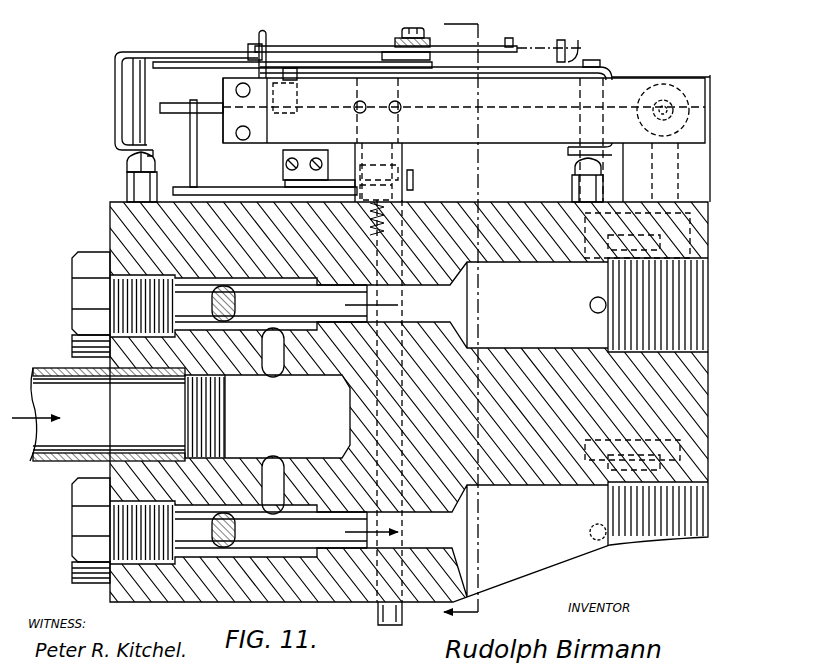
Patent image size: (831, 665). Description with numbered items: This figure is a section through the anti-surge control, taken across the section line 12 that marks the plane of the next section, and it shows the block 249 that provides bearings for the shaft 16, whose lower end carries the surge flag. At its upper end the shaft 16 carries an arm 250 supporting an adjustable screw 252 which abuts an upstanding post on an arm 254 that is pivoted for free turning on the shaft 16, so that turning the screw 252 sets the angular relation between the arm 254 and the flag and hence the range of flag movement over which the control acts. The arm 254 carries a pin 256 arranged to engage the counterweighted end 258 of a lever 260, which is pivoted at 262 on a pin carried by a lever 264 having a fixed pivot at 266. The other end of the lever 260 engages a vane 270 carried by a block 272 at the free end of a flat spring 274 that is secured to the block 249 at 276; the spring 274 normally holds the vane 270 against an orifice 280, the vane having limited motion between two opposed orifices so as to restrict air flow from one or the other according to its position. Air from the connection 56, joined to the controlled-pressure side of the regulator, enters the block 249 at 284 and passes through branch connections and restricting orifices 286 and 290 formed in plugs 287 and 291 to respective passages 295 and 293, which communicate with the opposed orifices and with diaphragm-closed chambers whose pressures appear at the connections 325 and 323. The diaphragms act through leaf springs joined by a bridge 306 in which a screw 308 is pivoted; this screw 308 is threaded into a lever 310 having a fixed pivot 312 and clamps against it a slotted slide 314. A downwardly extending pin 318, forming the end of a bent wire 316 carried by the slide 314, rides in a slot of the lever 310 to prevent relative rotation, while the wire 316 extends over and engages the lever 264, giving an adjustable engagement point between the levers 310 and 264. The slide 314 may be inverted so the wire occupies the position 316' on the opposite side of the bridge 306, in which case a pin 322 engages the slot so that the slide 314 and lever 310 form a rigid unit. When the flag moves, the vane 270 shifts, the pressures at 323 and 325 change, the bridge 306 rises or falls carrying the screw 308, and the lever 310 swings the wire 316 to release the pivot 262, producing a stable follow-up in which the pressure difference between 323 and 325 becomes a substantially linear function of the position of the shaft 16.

The section line 12- 12 is at (479, 309).
The shaft 16 is at (404, 158).
The connection 56 is at (46, 380).
The block 249 is at (712, 219).
The arm 250 is at (326, 178).
The adjustable screw 252 is at (317, 152).
The arm 254 is at (190, 188).
The pin 256 is at (190, 150).
The counterweighted end 258 is at (175, 100).
The lever 260 is at (516, 107).
The pivot 262 is at (294, 78).
The lever 264 is at (200, 62).
The fixed pivot 266 is at (593, 62).
The vane 270 is at (630, 90).
The block 272 is at (234, 140).
The flat spring 274 is at (277, 138).
The securing point 276 is at (404, 128).
The orifice 280 is at (680, 90).
The air inlet 284 is at (238, 412).
The orifice 286 is at (271, 530).
The plug 287 is at (76, 538).
The orifice 290 is at (271, 303).
The plug 291 is at (75, 282).
The passage 293 is at (589, 306).
The passage 295 is at (589, 532).
The bridge 306 is at (400, 46).
The screw 308 is at (400, 30).
The lever 310 is at (170, 52).
The fixed pivot 312 is at (134, 80).
The slide 314 is at (314, 46).
The bent wire 316 is at (281, 43).
The inverted wire position 316' is at (580, 35).
The pin 318 is at (250, 52).
The pin 322 is at (513, 42).
The connection 323 is at (712, 305).
The connection 325 is at (712, 505).